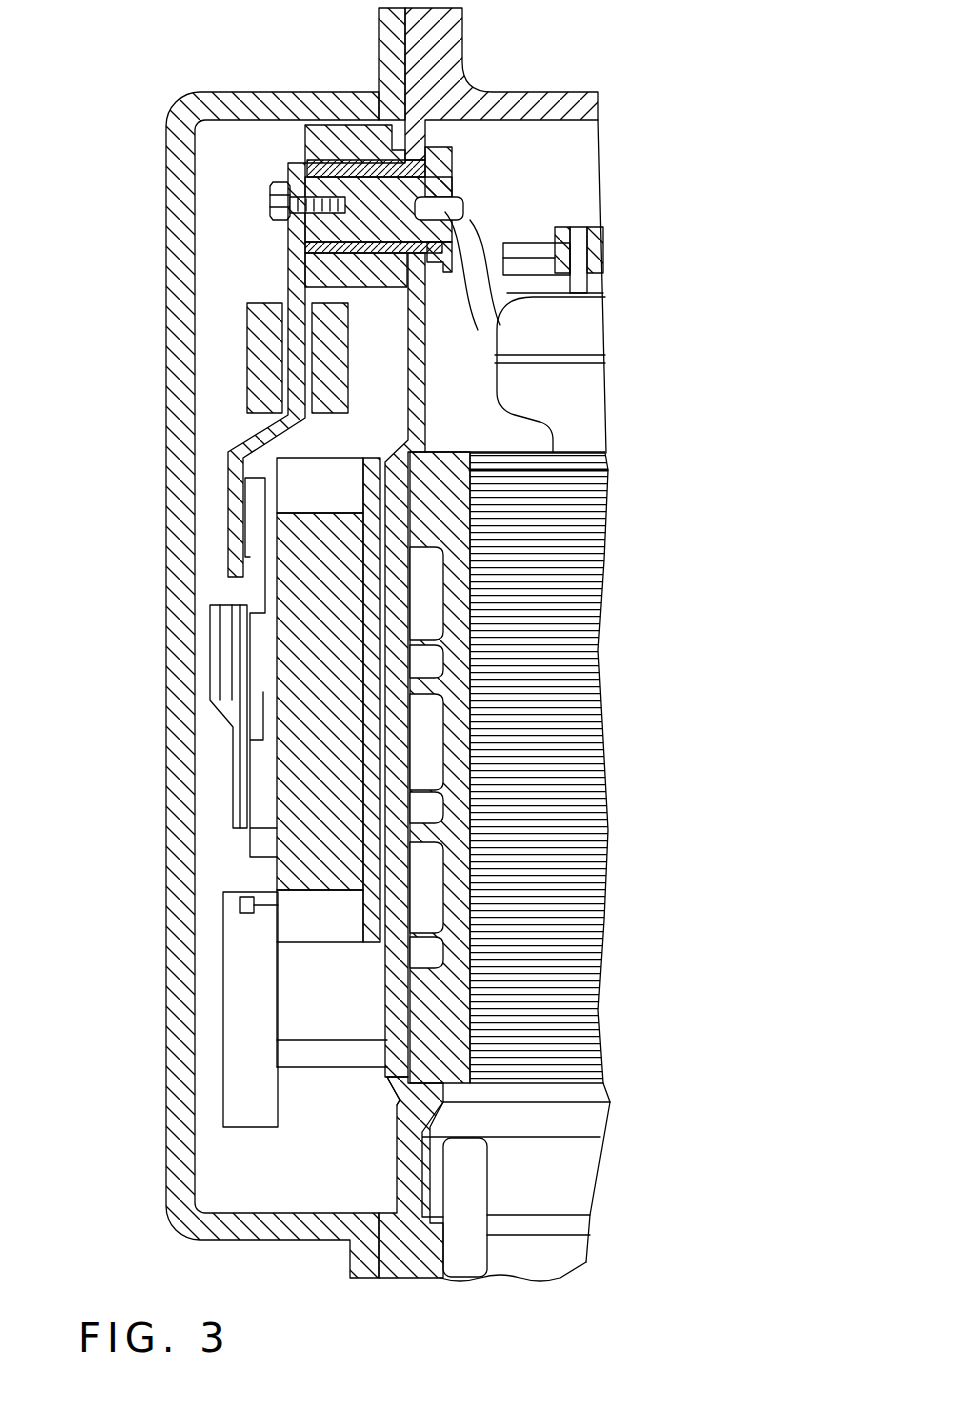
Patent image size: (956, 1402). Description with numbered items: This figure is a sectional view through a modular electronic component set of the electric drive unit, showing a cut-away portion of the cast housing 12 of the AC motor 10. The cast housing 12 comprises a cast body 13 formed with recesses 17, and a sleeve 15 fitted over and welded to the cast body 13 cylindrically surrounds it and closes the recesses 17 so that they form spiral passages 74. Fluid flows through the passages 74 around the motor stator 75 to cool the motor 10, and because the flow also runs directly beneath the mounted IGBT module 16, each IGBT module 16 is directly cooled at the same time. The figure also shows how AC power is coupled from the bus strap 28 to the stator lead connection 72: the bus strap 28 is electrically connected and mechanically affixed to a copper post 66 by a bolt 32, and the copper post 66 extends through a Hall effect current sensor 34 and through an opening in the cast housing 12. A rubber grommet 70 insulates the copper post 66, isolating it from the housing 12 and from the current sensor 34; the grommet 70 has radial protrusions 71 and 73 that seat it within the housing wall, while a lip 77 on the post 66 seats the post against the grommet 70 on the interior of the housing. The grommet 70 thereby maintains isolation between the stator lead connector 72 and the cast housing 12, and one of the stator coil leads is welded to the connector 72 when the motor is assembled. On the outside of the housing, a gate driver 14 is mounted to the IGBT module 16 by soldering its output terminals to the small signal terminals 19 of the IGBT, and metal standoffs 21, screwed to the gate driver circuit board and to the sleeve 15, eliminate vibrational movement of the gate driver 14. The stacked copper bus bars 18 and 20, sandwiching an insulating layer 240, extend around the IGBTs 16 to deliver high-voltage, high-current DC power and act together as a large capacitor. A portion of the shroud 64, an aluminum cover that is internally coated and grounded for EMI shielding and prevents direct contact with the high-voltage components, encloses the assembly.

The AC motor 10 is at (627, 1138).
The cast housing 12 is at (428, 352).
The cast body 13 is at (408, 1170).
The gate driver 14 is at (248, 1090).
The sleeve 15 is at (395, 1087).
The IGBT module 16 is at (300, 873).
The recesses 17 is at (423, 955).
The copper bus bar 18 is at (237, 612).
The small signal terminals 19 is at (250, 905).
The copper bus bar 20 is at (212, 640).
The metal standoff 21 is at (358, 1052).
The bus strap 28 is at (297, 278).
The bolt 32 is at (278, 207).
The Hall effect current sensor 34 is at (325, 135).
The shroud 64 is at (180, 452).
The copper post 66 is at (363, 187).
The rubber grommet 70 is at (447, 132).
The radial protrusion 71 is at (383, 262).
The stator lead connection 72 is at (483, 230).
The radial protrusion 73 is at (443, 262).
The passages 74 is at (427, 870).
The motor stator 75 is at (600, 572).
The lip 77 is at (448, 162).
The insulating layer 240 is at (227, 622).